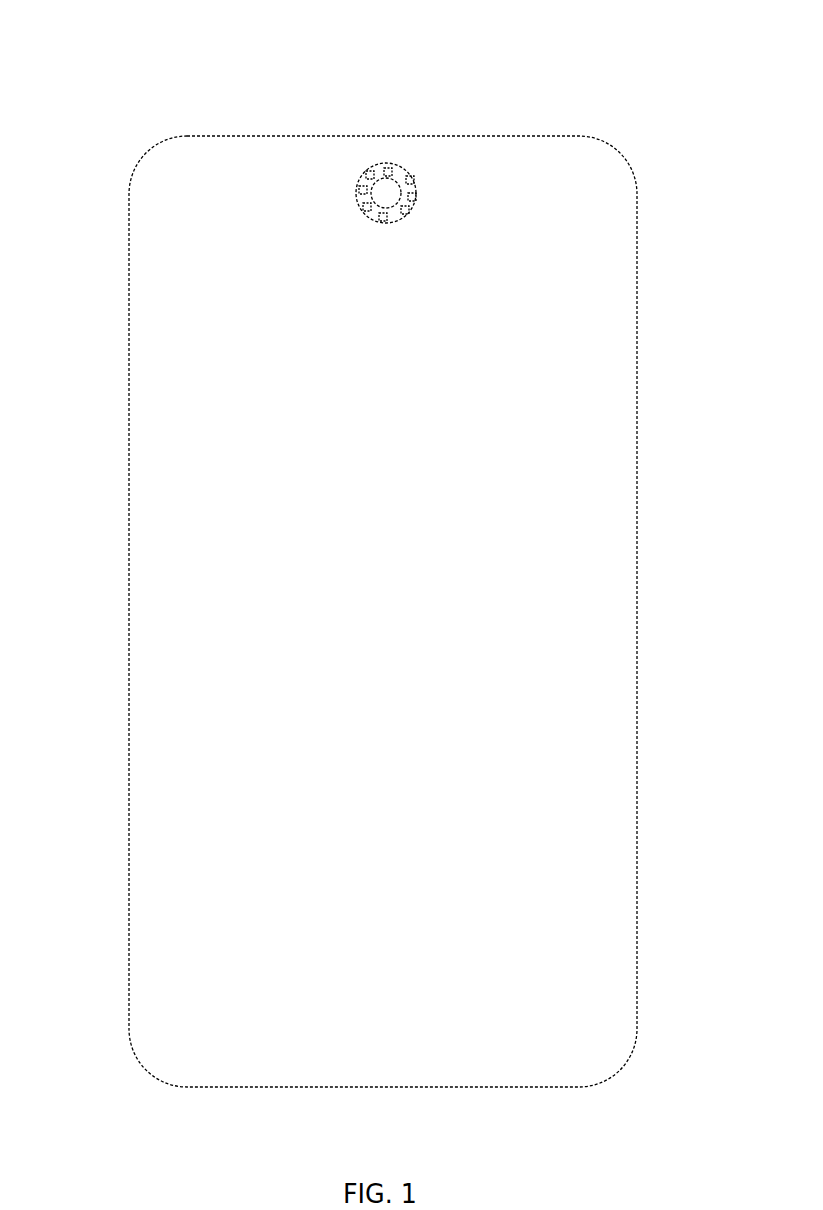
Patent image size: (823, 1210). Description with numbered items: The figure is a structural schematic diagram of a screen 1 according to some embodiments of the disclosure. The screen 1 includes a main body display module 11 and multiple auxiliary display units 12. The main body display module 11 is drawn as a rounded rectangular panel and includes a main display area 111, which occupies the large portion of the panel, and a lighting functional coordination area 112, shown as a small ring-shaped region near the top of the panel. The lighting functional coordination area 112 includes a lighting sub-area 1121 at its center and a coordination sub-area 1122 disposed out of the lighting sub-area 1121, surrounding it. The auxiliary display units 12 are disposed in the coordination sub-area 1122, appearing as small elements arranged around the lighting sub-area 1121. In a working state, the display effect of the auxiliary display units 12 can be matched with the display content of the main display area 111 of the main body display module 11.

The screen 1 is at (146, 91).
The main body display module 11 is at (239, 136).
The main display area 111 is at (253, 242).
The lighting functional coordination area 112 is at (367, 217).
The lighting sub-area 1121 is at (382, 191).
The coordination sub-area 1122 is at (413, 187).
The auxiliary display units 12 is at (407, 214).